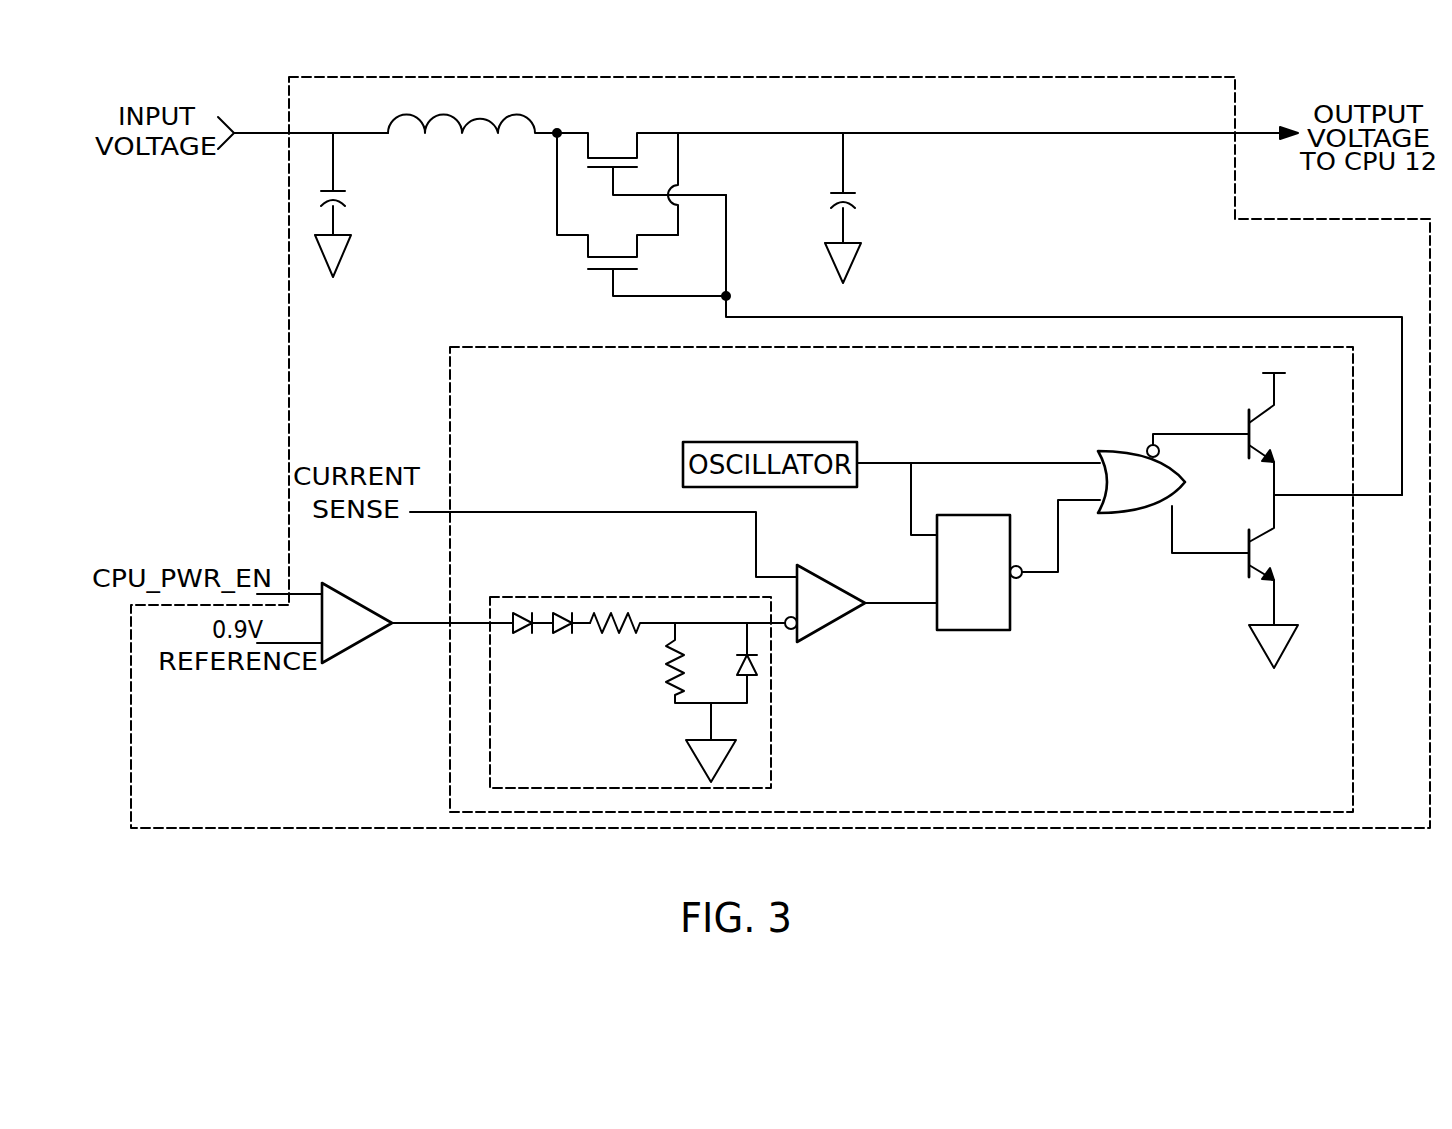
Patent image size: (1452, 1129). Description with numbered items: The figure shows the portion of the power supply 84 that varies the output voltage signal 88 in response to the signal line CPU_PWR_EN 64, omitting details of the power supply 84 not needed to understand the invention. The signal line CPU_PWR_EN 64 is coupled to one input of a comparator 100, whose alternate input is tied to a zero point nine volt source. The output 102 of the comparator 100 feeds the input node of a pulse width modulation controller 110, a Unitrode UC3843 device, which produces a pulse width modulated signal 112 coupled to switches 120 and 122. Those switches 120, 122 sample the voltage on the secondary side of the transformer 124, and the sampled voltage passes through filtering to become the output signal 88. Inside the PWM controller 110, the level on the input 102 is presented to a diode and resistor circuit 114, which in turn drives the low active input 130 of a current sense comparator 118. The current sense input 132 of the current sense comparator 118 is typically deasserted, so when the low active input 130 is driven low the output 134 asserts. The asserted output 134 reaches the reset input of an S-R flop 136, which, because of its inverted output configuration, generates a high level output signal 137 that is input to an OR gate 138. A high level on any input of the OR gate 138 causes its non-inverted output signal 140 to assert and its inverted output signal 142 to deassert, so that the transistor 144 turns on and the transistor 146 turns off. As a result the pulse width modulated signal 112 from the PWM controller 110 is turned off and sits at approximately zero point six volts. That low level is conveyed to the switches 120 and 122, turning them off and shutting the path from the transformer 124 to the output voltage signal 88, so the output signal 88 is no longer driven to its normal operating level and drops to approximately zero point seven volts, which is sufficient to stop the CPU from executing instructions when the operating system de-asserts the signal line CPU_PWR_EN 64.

The signal line CPU_PWR_EN 64 is at (305, 590).
The power supply 84 is at (637, 832).
The output voltage signal 88 is at (1267, 130).
The comparator 100 is at (365, 580).
The output of comparator 102 is at (405, 620).
The pulse width modulation controller 110 is at (490, 345).
The pulse width modulated signal 112 is at (1126, 314).
The diode and resistor circuit 114 is at (583, 595).
The current sense comparator 118 is at (823, 578).
The switch 120 is at (614, 250).
The switch 122 is at (614, 140).
The transformer 124 is at (482, 115).
The low active input 130 is at (782, 633).
The current sense input 132 is at (777, 575).
The output 134 is at (893, 600).
The S-R flop 136 is at (970, 515).
The output signal 137 is at (1032, 568).
The OR gate 138 is at (1118, 448).
The non-inverted output signal 140 is at (1192, 556).
The inverted output signal 142 is at (1192, 432).
The transistor 144 is at (1265, 550).
The transistor 146 is at (1265, 435).